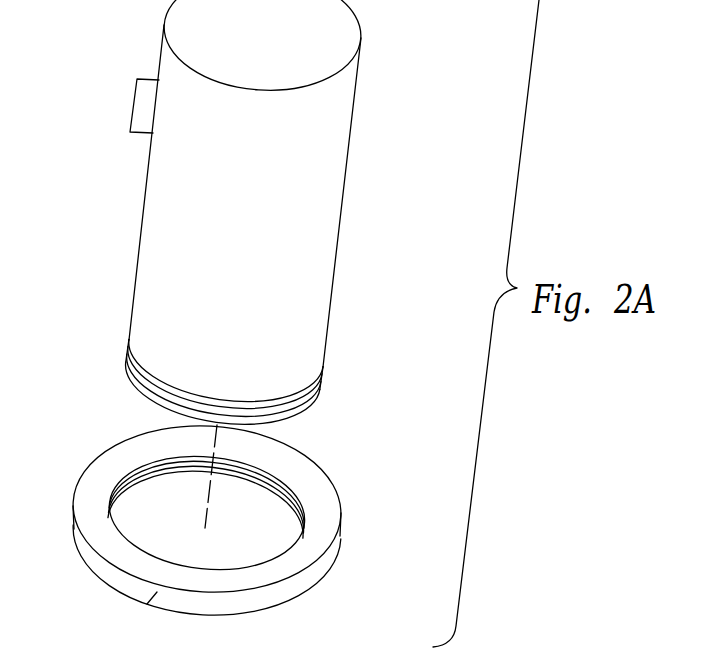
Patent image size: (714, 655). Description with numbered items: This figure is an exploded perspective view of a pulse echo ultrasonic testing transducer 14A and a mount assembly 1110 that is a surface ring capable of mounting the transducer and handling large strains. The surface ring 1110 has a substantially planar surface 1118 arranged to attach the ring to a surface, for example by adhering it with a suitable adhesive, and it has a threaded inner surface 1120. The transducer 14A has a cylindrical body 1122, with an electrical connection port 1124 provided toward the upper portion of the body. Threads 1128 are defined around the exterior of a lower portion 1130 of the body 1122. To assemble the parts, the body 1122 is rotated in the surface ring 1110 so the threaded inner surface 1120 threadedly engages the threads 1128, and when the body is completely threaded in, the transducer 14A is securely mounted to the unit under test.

The pulse echo ultrasonic testing transducer 14A is at (254, 228).
The cylindrical body 1122 is at (150, 204).
The electrical connection port 1124 is at (138, 110).
The threads 1128 is at (303, 414).
The lower portion 1130 is at (124, 314).
The mount assembly 1110 is at (247, 520).
The threaded inner surface 1120 is at (242, 465).
The substantially planar surface 1118 is at (147, 604).